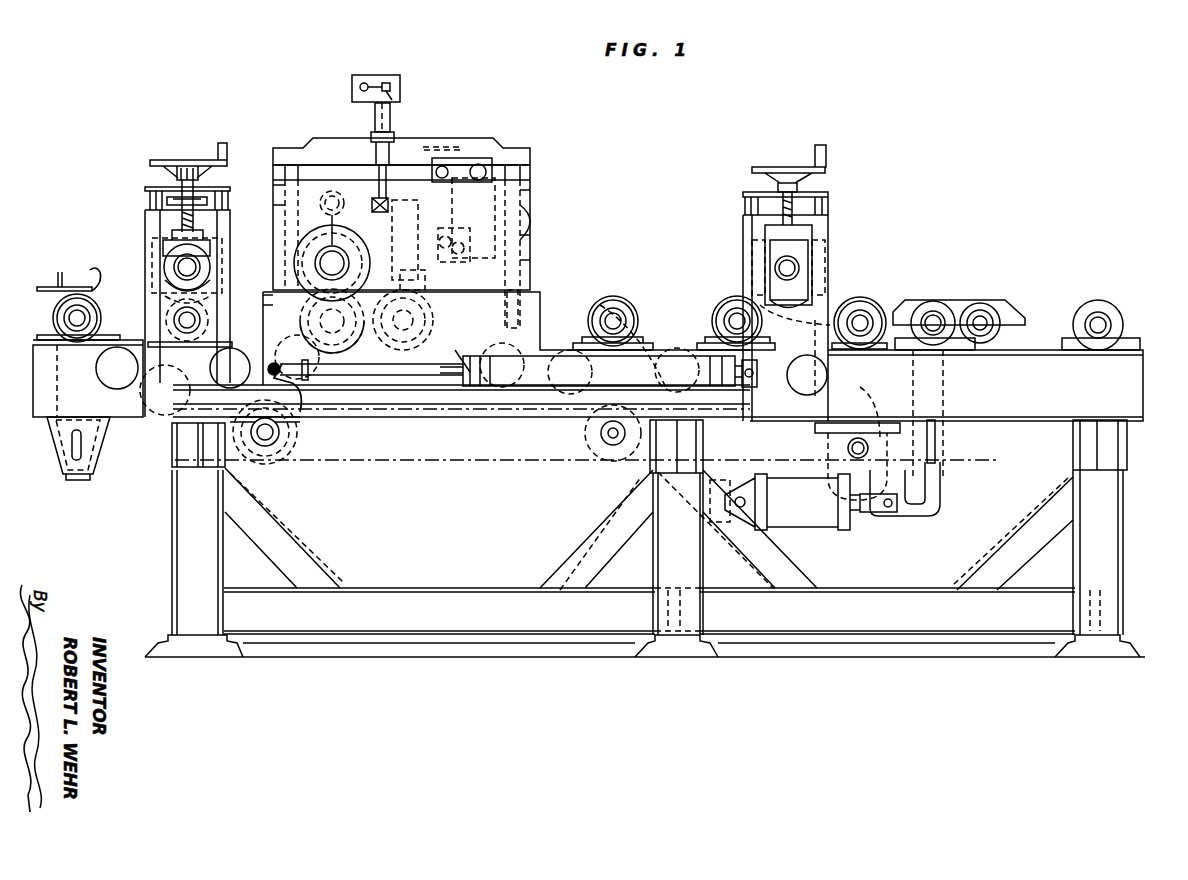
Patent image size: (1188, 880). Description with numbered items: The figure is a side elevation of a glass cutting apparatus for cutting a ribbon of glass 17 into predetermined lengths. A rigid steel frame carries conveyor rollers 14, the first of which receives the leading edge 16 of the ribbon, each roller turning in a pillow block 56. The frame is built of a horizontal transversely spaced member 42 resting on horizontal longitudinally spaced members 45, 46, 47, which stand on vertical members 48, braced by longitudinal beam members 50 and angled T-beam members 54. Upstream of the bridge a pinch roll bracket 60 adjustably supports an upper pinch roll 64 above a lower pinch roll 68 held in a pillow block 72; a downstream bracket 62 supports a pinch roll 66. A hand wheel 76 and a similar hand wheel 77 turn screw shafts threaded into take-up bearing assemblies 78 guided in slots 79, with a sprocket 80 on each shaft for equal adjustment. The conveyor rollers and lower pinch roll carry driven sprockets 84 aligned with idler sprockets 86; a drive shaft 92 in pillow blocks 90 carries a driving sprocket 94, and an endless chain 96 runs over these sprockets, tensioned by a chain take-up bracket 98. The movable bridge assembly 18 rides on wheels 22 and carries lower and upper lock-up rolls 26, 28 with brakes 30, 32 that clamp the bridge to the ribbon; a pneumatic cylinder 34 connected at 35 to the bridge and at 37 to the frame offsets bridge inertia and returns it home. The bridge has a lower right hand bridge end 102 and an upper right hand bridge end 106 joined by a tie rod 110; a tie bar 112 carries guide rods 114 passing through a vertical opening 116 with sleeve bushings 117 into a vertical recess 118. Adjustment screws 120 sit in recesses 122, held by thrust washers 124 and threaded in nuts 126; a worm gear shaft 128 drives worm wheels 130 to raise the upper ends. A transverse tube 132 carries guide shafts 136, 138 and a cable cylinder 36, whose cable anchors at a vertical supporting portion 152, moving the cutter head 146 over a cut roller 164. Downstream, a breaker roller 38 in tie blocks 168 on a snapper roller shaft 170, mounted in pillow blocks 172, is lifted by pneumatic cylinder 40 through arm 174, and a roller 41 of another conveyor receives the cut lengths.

The conveyor rollers 14 is at (55, 304).
The leading edge 16 is at (69, 274).
The ribbon of glass 17 is at (60, 272).
The bridge assembly 18 is at (303, 125).
The wheels 22 is at (342, 352).
The lower lock-up roll 26 is at (395, 354).
The upper lock-up roll 28 is at (330, 230).
The brake 30 is at (272, 340).
The brake 32 is at (356, 238).
The pneumatically operated cylinder 34 is at (525, 388).
The connection point 35 is at (297, 430).
The cable cylinder 36 is at (542, 222).
The connection point 37 is at (755, 366).
The breaker roller 38 is at (985, 300).
The pneumatic cylinder 40 is at (790, 528).
The first roller of another conveyor 41 is at (1105, 300).
The horizontal transversely spaced member 42 is at (1032, 421).
The horizontal longitudinally spaced member 45 is at (195, 437).
The horizontal longitudinally spaced member 46 is at (690, 443).
The horizontal longitudinally spaced member 47 is at (1110, 450).
The vertical longitudinally spaced members 48 is at (224, 568).
The longitudinal beam members 50 is at (462, 588).
The angularly disposed T-beam members 54 is at (288, 530).
The pillow block 56 is at (42, 338).
The pinch roll bracket 60 is at (146, 226).
The pinch roll bracket 62 is at (745, 233).
The upper pinch roll 64 is at (165, 285).
The pinch roll 66 is at (800, 275).
The lower pinch roll 68 is at (155, 341).
The pillow block 72 is at (158, 330).
The hand wheel 76 is at (224, 143).
The hand wheel 77 is at (200, 222).
The take-up bearing assembly 78 is at (212, 236).
The slots 79 is at (152, 255).
The sprocket 80 is at (172, 196).
The driven sprocket 84 is at (95, 300).
The idler sprockets 86 is at (138, 390).
The pillow blocks 90 is at (818, 430).
The drive shaft 92 is at (862, 458).
The driving sprocket 94 is at (830, 465).
The endless chain 96 is at (864, 404).
The chain take-up bracket 98 is at (95, 452).
The lower right hand bridge end 102 is at (268, 306).
The upper right hand bridge end 106 is at (276, 195).
The bridge tie rod 110 is at (336, 197).
The tie bar 112 is at (355, 138).
The guide rods 114 is at (300, 170).
The vertical opening 116 is at (272, 208).
The sleeve bushings 117 is at (280, 172).
The vertical recess 118 is at (270, 290).
The bridge end adjustment screws 120 is at (345, 170).
The recesses 122 is at (372, 210).
The thrust washers 124 is at (392, 140).
The bridge end adjustment nuts 126 is at (392, 198).
The worm gear shaft 128 is at (362, 83).
The worm wheels 130 is at (392, 90).
The transverse rectangular tube 132 is at (533, 268).
The transverse shaft 136 is at (483, 165).
The transverse shaft 138 is at (458, 266).
The cutter head 146 is at (422, 278).
The vertical supporting portion 152 is at (488, 218).
The cut roller 164 is at (430, 340).
The tie blocks 168 is at (923, 298).
The snapper roller shaft 170 is at (955, 352).
The pillow blocks 172 is at (905, 350).
The arm 174 is at (950, 497).